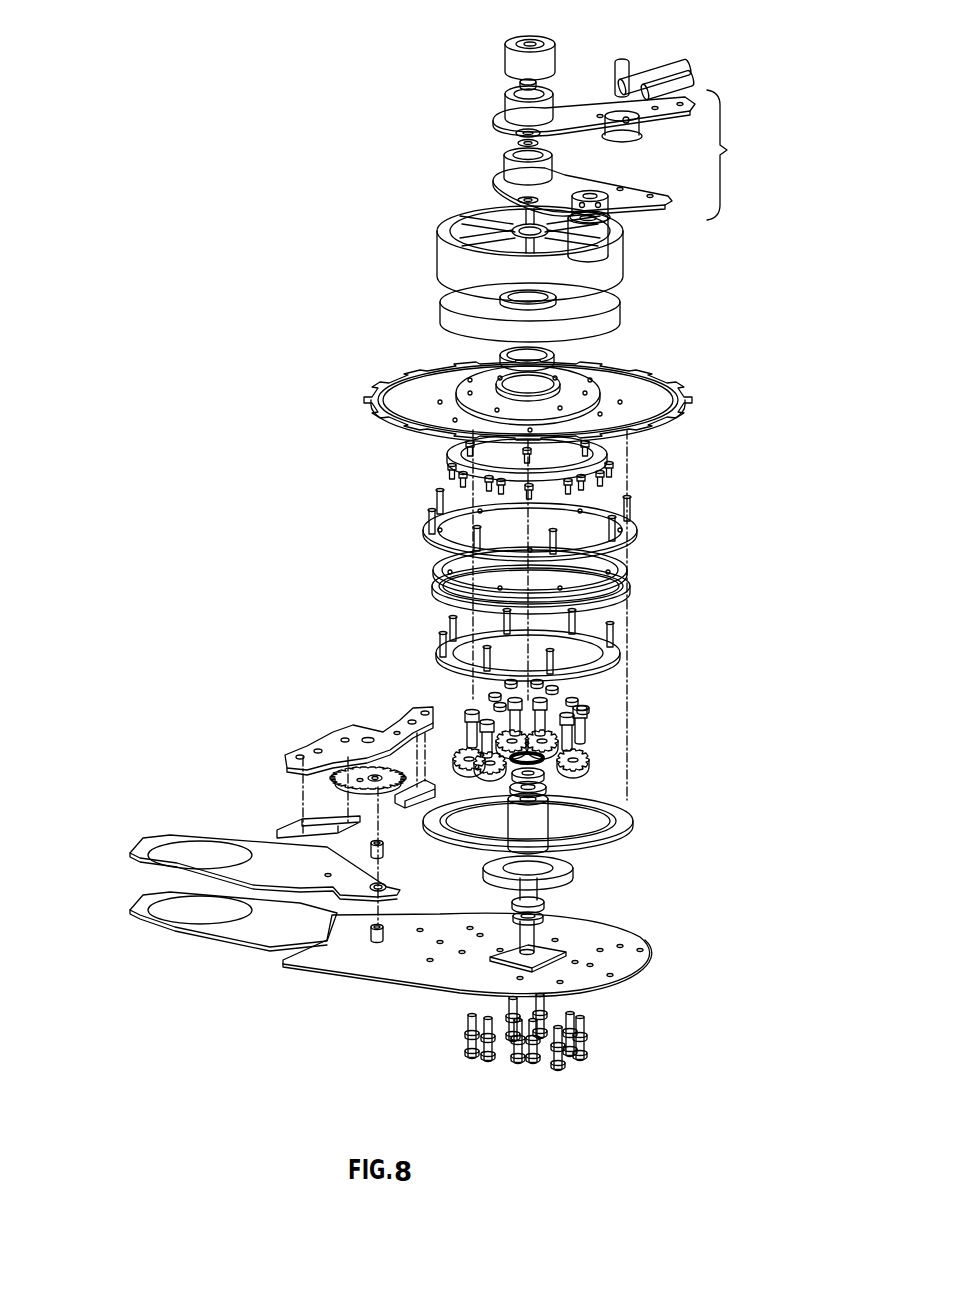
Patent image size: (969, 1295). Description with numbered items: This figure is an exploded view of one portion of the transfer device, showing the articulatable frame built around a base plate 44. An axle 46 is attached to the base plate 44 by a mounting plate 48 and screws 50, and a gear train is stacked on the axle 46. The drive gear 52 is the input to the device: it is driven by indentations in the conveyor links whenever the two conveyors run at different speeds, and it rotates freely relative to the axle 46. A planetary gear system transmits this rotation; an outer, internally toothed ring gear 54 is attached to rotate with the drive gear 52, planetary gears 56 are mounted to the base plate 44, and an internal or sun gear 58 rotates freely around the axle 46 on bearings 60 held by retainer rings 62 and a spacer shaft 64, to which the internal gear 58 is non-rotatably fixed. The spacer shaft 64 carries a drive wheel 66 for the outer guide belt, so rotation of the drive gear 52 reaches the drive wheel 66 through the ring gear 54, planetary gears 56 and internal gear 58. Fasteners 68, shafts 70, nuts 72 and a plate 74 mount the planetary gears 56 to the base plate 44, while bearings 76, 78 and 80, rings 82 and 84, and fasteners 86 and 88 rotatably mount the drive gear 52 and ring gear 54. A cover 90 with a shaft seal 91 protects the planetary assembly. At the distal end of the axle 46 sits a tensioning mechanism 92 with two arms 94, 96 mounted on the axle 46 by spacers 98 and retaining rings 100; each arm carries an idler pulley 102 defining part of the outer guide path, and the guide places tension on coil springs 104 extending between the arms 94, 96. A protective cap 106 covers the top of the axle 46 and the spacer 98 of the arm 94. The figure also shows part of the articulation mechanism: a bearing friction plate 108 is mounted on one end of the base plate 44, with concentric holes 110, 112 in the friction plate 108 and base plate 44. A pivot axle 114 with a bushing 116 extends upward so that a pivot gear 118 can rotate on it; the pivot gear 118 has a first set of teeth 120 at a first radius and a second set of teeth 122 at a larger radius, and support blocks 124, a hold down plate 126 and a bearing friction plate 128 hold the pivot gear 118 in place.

The base plate 44 is at (203, 938).
The axle 46 is at (537, 890).
The mounting plate 48 is at (647, 960).
The screws 50 is at (540, 1052).
The drive gear 52 is at (660, 380).
The ring gear 54 is at (610, 450).
The planetary gears 56 is at (593, 755).
The internal gear 58 is at (570, 867).
The bearings 60 is at (547, 792).
The retainer rings 62 is at (547, 778).
The spacer shaft 64 is at (512, 822).
The drive wheel 66 is at (620, 241).
The fasteners 68 is at (545, 1005).
The shafts 70 is at (593, 717).
The nuts 72 is at (587, 702).
The plate 74 is at (580, 373).
The bearing 76 is at (627, 565).
The bearing 78 is at (432, 580).
The bearing 80 is at (633, 833).
The ring 82 is at (427, 527).
The ring 84 is at (620, 653).
The fasteners 86 is at (632, 508).
The fasteners 88 is at (612, 468).
The cover 90 is at (617, 310).
The shaft seal 91 is at (492, 360).
The tensioning mechanism 92 is at (729, 155).
The arm 94 is at (497, 120).
The arm 96 is at (670, 200).
The spacers 98 is at (505, 108).
The retaining rings 100 is at (521, 82).
The idler pulley 102 is at (633, 127).
The coil springs 104 is at (690, 70).
The protective cap 106 is at (505, 62).
The bearing friction plate 108 is at (147, 867).
The hole 110 is at (153, 840).
The hole 112 is at (143, 920).
The pivot axle 114 is at (375, 941).
The bushing 116 is at (371, 857).
The pivot gear 118 is at (340, 781).
The first set of teeth 120 is at (350, 785).
The second set of teeth 122 is at (336, 772).
The support blocks 124 is at (277, 828).
The hold down plate 126 is at (333, 778).
The bearing friction plate 128 is at (287, 755).